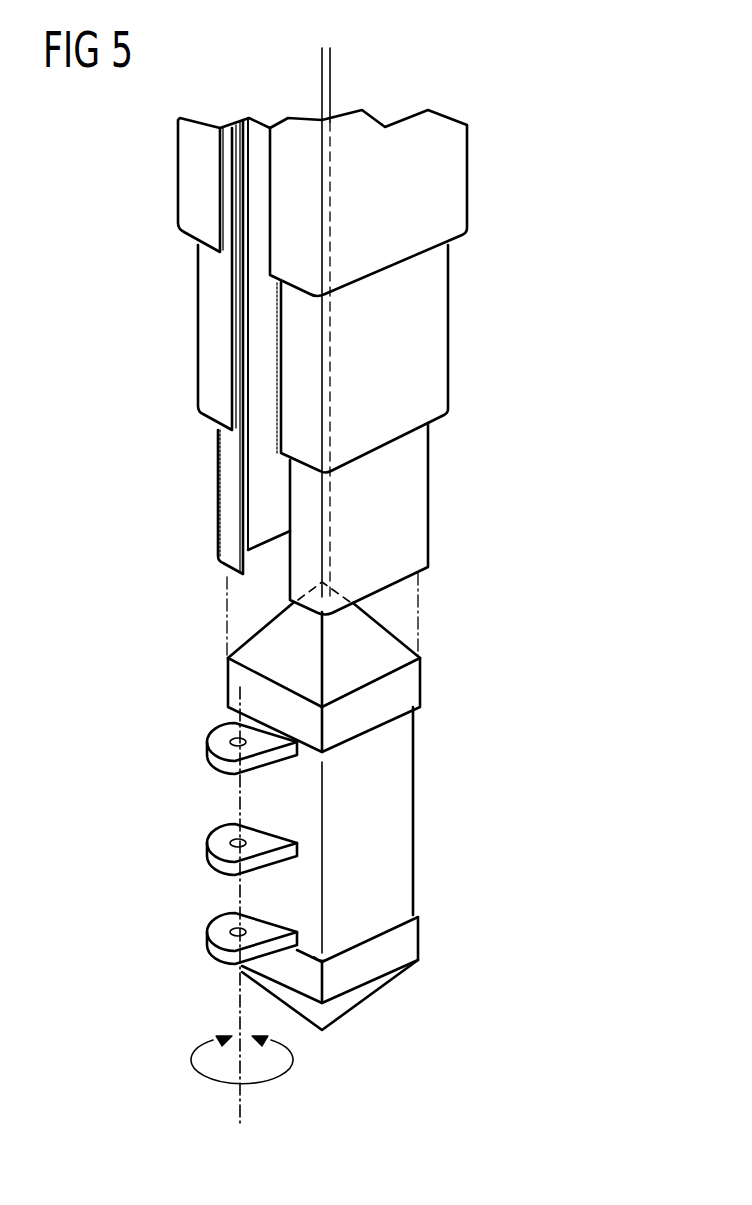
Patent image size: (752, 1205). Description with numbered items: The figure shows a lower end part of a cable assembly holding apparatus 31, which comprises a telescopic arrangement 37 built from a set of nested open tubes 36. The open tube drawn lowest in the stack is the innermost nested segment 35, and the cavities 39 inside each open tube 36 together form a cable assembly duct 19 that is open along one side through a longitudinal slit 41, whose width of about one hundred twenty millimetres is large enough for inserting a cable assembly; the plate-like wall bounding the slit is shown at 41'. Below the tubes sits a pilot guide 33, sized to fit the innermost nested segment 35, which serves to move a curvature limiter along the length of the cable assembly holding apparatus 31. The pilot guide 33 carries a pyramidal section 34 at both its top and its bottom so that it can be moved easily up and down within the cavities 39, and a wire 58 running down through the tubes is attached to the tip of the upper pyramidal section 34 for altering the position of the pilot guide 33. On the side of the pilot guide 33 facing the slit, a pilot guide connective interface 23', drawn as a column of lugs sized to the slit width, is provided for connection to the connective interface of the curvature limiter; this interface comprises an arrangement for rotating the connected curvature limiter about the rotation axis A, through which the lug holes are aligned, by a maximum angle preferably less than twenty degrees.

The wire 58 is at (330, 66).
The shaft axis 19 is at (267, 382).
The telescopic arrangement 37 is at (415, 362).
The open tubes 36 is at (452, 182).
The innermost nested segment 35 is at (417, 503).
The cable assembly holding apparatus 31 is at (165, 379).
The plate 41' is at (200, 314).
The longitudinal slit 41 is at (240, 379).
The cavities 39 is at (280, 550).
The pyramidal section 34 is at (380, 642).
The pilot guide 33 is at (428, 803).
The pilot guide connective interface 23' is at (220, 843).
The rotation axis A is at (242, 1107).